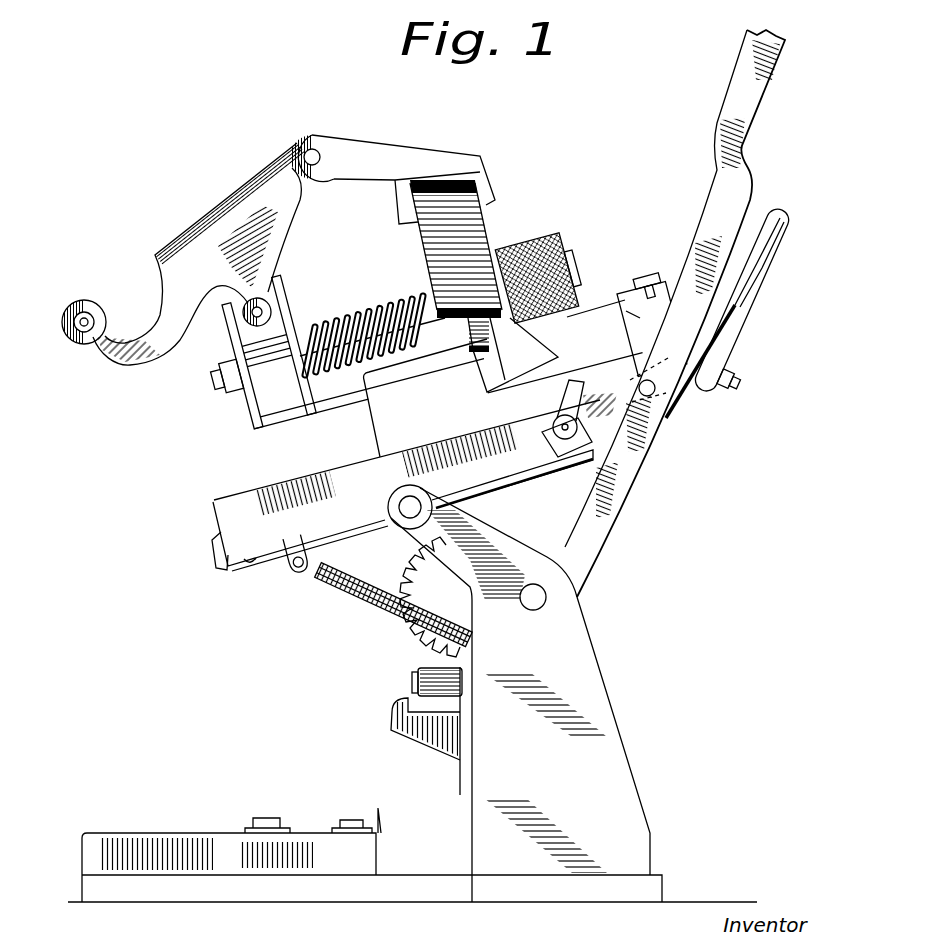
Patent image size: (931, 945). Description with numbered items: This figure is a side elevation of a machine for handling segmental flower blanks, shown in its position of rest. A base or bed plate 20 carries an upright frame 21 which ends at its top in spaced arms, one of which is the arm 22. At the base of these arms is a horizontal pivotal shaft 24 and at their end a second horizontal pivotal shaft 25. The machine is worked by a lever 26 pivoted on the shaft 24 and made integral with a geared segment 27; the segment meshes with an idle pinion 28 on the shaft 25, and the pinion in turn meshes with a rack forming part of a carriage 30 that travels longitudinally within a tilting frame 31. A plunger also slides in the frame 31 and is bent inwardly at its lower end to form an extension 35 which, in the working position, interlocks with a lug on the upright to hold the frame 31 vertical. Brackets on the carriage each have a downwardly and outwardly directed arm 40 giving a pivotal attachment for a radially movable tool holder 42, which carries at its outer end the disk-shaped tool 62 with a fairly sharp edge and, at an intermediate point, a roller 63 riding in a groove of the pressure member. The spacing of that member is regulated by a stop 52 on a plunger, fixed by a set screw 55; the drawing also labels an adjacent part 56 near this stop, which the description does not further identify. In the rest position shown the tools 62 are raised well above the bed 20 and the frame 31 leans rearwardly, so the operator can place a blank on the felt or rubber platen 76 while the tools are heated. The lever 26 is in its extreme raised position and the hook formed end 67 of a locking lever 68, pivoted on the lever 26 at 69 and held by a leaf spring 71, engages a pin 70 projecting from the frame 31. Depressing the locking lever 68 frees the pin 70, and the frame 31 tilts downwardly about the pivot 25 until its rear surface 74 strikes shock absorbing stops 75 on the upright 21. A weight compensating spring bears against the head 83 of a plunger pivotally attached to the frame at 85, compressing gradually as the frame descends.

The base or bed plate 20 is at (413, 927).
The upright frame 21 is at (640, 821).
The spaced arm 22 is at (480, 522).
The horizontal pivotal shaft 24 is at (545, 597).
The horizontal pivotal shaft 25 is at (412, 505).
The lever 26 is at (615, 496).
The geared segment 27 is at (433, 590).
The idle pinion 28 is at (396, 523).
The carriage 30 is at (380, 420).
The frame 31 is at (232, 527).
The extension 35 is at (218, 560).
The arm 40 is at (365, 150).
The tool holder 42 is at (220, 217).
The stop 52 is at (655, 283).
The set screw 55 is at (638, 274).
The rod 56 is at (632, 315).
The tool 62 is at (85, 341).
The roller 63 is at (277, 315).
The hook formed end 67 is at (551, 458).
The locking lever 68 is at (740, 297).
The pivot 69 is at (655, 389).
The pin 70 is at (570, 415).
The leaf spring 71 is at (735, 258).
The rear surface 74 is at (252, 562).
The stop 75 is at (413, 683).
The platen 76 is at (167, 840).
The head 83 is at (307, 574).
The pivotal attachment 85 is at (298, 569).